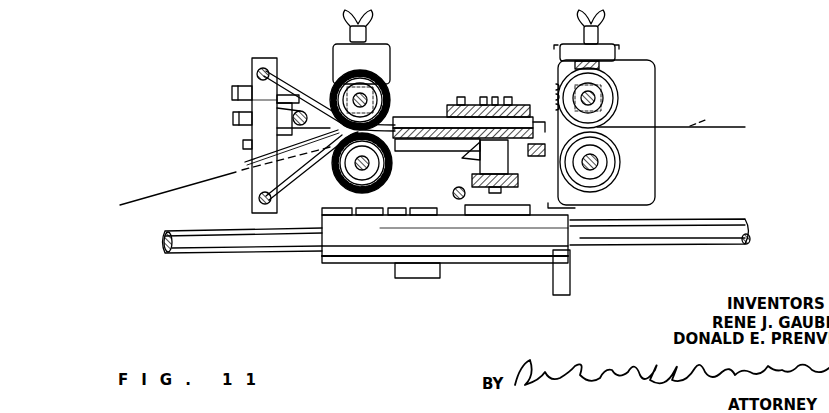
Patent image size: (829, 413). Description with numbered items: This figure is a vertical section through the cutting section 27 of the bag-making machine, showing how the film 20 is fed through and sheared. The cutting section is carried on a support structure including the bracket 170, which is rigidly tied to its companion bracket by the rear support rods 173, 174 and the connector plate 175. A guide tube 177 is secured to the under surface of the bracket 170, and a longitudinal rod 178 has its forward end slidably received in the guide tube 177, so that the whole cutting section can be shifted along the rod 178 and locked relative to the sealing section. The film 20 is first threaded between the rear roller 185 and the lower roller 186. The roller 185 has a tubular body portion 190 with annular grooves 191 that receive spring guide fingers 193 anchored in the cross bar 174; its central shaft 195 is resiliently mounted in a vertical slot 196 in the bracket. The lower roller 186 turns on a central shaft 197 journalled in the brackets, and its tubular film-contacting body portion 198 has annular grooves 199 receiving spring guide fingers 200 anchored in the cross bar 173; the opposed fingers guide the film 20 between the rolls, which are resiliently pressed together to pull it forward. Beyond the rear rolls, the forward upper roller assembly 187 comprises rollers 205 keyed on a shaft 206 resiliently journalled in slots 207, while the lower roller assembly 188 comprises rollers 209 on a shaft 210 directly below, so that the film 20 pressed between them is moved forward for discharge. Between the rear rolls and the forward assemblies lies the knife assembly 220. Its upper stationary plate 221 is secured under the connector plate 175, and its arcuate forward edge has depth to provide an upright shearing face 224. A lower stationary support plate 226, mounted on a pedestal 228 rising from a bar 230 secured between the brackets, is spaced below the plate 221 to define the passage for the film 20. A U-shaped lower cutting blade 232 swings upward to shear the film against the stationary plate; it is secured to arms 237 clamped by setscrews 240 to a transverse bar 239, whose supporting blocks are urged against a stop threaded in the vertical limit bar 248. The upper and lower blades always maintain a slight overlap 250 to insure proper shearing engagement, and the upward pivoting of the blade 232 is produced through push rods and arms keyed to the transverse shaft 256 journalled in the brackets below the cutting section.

The film 20 is at (175, 181).
The cutting section 27 is at (318, 260).
The bracket 170 is at (643, 160).
The rear support rod 173 is at (259, 198).
The rear support rod 174 is at (257, 74).
The connector plate 175 is at (528, 104).
The guide tube 177 is at (446, 250).
The rod 178 is at (732, 221).
The rear roller 185 is at (388, 80).
The lower roller 186 is at (370, 191).
The forward upper roller assembly 187 is at (624, 86).
The lower roller assembly 188 is at (624, 176).
The tubular body portion 190 is at (383, 95).
The annular grooves 191 is at (345, 85).
The spring guide fingers 193 is at (250, 93).
The central shaft 195 is at (368, 100).
The vertical slot 196 is at (386, 60).
The central shaft 197 is at (392, 186).
The tubular film-contacting body portion 198 is at (370, 165).
The annular grooves 199 is at (386, 178).
The spring guide fingers 200 is at (320, 165).
The rollers 205 is at (605, 100).
The shaft 206 is at (608, 126).
The slots 207 is at (600, 67).
The rollers 209 is at (605, 146).
The shaft 210 is at (597, 168).
The knife assembly 220 is at (479, 98).
The upper stationary plate 221 is at (556, 106).
The upright shearing face 224 is at (533, 128).
The lower stationary support plate 226 is at (462, 152).
The pedestal 228 is at (512, 178).
The bar 230 is at (504, 186).
The lower cutting blade 232 is at (519, 152).
The arms 237 is at (246, 162).
The transverse bar 239 is at (245, 145).
The setscrews 240 is at (280, 100).
The vertical limit bar 248 is at (265, 58).
The overlap 250 is at (428, 115).
The shaft 256 is at (462, 201).